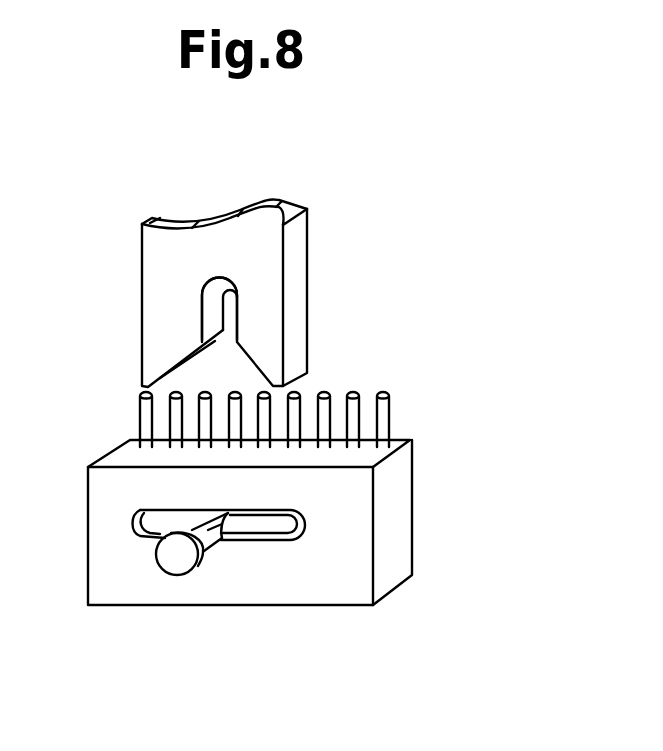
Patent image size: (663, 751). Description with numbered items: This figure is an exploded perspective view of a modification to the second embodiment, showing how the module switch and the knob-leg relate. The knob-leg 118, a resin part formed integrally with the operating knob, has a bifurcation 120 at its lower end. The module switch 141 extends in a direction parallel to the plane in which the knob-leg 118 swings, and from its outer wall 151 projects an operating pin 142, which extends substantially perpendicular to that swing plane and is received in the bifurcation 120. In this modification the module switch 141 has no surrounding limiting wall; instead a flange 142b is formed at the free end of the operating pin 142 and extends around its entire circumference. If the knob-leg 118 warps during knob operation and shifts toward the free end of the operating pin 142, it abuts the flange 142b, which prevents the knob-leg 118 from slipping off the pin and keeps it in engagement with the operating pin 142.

The knob-leg 118 is at (292, 282).
The bifurcation 120 is at (210, 316).
The module switch 141 is at (411, 482).
The operating pin 142 is at (292, 523).
The flange 142b is at (177, 557).
The outer wall 151 is at (160, 498).